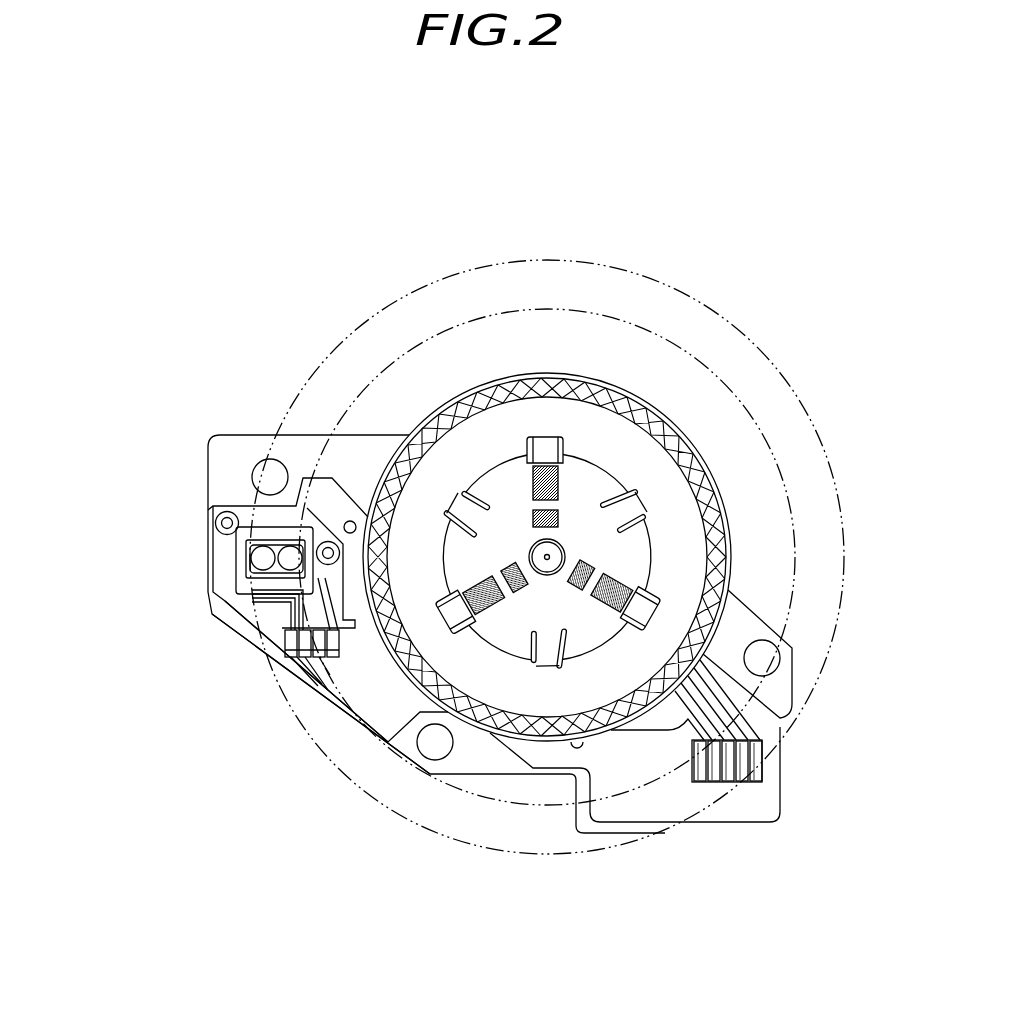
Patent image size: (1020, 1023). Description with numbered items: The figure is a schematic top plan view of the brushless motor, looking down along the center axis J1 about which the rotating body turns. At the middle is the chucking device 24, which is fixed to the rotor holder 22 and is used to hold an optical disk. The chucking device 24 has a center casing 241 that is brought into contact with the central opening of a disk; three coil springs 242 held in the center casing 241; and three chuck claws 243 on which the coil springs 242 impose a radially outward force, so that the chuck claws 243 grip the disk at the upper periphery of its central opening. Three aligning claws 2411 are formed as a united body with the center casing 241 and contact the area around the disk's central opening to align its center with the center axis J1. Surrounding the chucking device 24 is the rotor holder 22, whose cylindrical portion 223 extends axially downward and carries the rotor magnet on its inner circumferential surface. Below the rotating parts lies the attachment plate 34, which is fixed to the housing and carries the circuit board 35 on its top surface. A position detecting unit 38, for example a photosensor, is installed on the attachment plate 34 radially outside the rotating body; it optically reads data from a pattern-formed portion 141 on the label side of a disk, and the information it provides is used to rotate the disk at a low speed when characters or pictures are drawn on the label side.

The rotor holder 22 is at (508, 497).
The cylindrical portion 223 is at (413, 430).
The chucking device 24 is at (655, 439).
The center casing 241 is at (606, 438).
The aligning claws 2411 is at (633, 508).
The coil springs 242 is at (530, 478).
The chuck claws 243 is at (543, 437).
The center axis J1 is at (550, 558).
The position detecting unit 38 is at (196, 558).
The pattern-formed portion 141 is at (310, 738).
The attachment plate 34 is at (460, 762).
The circuit board 35 is at (683, 787).